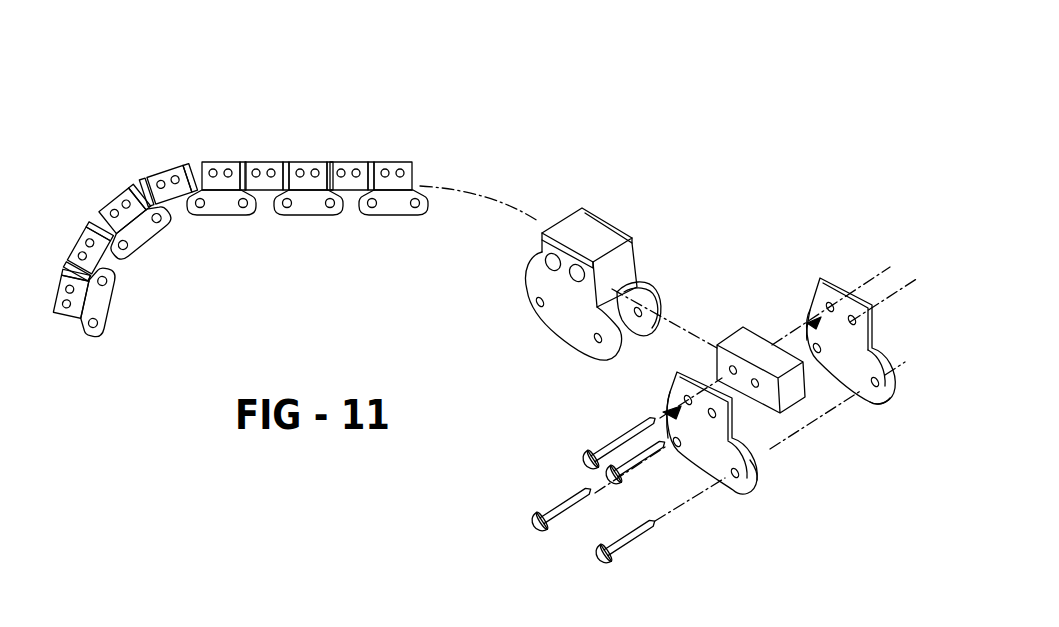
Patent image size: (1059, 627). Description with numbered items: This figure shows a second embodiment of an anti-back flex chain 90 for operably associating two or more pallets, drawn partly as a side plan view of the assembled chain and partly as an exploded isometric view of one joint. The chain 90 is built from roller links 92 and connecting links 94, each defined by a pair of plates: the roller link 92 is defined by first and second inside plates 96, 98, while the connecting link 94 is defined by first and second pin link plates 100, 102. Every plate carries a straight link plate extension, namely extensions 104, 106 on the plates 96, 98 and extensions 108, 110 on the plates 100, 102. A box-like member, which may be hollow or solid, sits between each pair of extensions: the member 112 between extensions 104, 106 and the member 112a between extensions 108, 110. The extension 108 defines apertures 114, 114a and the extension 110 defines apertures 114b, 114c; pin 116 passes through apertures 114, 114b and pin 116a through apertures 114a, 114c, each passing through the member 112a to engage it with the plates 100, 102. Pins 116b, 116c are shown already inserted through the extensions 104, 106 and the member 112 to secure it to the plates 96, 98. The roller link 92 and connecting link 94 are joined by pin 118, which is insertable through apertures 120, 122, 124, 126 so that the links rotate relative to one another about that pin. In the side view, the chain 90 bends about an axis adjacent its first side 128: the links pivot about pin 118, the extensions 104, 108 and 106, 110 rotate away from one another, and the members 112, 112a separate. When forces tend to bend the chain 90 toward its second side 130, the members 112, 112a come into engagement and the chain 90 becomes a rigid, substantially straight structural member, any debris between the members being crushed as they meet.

The anti-back flex chain 90 is at (315, 145).
The second side of the chain 130 is at (130, 163).
The first side of the chain 128 is at (153, 267).
The roller link 92 is at (635, 182).
The extension of second inside plate 106 is at (633, 240).
The member 112 is at (570, 227).
The extension of first inside plate 104 is at (540, 280).
The pin 116b is at (547, 258).
The pin 116c is at (550, 337).
The first inside plate 96 is at (553, 337).
The aperture 122 is at (600, 350).
The second inside plate 98 is at (660, 290).
The aperture 124 is at (670, 332).
The member 112a is at (748, 328).
The aperture 114 is at (677, 373).
The aperture 114a is at (758, 462).
The first pin link plate 100 is at (742, 495).
The extension of first pin link plate 108 is at (758, 468).
The aperture 120 is at (666, 425).
The connecting link 94 is at (833, 247).
The aperture 126 is at (812, 280).
The aperture 114b is at (848, 282).
The aperture 114c is at (866, 282).
The extension of second pin link plate 110 is at (887, 395).
The second pin link plate 102 is at (873, 405).
The pin 116 is at (580, 462).
The pin 116a is at (606, 482).
The pin 118 is at (533, 525).